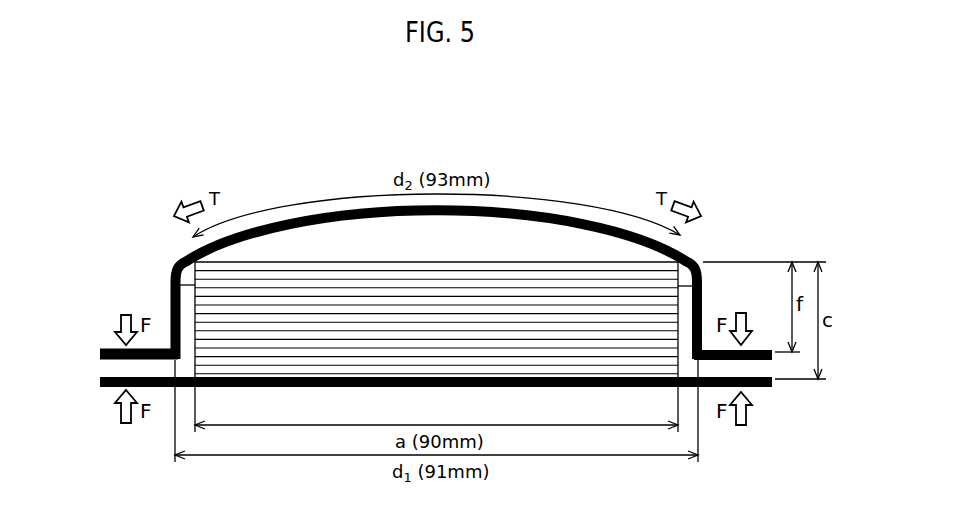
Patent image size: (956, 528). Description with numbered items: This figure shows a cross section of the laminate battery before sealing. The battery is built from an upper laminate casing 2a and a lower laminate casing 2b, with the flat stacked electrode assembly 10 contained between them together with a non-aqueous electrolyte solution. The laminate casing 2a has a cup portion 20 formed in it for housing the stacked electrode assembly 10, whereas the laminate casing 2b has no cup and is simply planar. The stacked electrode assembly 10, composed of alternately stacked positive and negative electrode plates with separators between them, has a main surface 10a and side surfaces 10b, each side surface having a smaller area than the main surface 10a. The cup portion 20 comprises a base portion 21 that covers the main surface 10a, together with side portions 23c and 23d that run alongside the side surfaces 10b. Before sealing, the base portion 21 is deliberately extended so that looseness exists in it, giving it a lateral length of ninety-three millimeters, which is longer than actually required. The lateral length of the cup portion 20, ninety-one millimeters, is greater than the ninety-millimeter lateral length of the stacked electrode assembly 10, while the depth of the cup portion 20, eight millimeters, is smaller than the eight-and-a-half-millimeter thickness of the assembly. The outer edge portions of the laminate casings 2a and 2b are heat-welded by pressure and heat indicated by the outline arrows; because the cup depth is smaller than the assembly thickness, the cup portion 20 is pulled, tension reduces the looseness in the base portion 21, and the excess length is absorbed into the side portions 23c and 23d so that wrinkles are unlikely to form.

The cup portion 20 is at (439, 245).
The base portion 21 is at (336, 214).
The side portion 23c is at (170, 294).
The side portion 23d is at (704, 296).
The stacked electrode assembly 10 is at (439, 324).
The main surface 10a is at (413, 261).
The side surfaces 10b is at (172, 284).
The laminate casing 2a is at (102, 346).
The laminate casing 2b is at (100, 385).